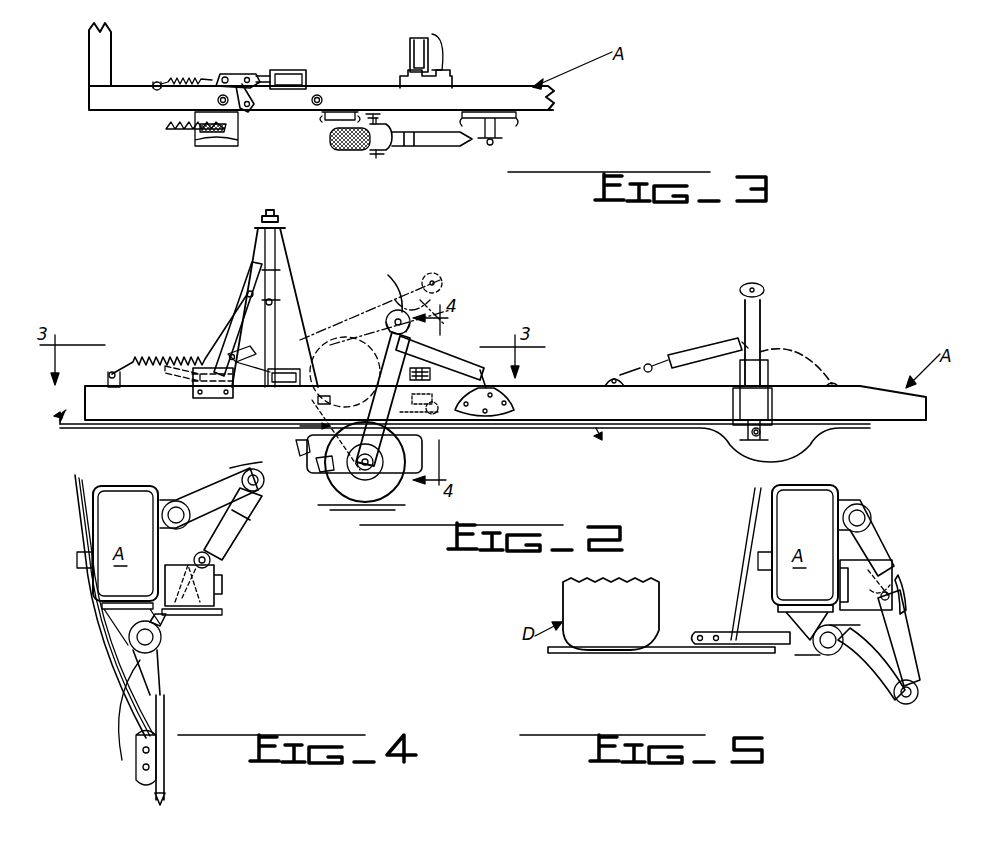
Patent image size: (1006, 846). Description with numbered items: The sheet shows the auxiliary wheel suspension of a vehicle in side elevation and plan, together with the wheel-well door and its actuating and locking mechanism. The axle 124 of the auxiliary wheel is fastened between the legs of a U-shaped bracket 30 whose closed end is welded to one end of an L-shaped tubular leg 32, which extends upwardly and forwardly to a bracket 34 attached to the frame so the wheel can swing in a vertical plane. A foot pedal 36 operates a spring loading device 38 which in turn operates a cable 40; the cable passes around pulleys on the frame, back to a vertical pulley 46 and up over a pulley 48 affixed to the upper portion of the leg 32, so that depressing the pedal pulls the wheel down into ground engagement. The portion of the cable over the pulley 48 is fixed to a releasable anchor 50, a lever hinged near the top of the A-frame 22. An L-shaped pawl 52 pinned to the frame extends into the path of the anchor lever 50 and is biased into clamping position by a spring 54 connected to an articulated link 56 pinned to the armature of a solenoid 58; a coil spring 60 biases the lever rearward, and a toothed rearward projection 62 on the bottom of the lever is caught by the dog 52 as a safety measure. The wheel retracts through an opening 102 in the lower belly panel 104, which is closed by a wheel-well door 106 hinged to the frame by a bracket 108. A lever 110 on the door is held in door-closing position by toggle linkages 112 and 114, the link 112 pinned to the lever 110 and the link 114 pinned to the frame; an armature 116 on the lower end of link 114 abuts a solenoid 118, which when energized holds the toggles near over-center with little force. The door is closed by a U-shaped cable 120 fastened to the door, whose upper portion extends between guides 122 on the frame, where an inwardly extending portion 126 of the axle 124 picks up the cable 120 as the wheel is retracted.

In FIG. 2, the A-frame 22 is at (288, 250).
In FIG. 3, the U-shaped bracket 30 is at (380, 148).
In FIG. 2, the U-shaped bracket 30 is at (318, 460).
In FIG. 3, the L-shaped tubular leg 32 is at (442, 142).
In FIG. 2, the L-shaped tubular leg 32 is at (450, 392).
In FIG. 3, the bracket 34 is at (498, 130).
In FIG. 2, the bracket 34 is at (494, 412).
In FIG. 2, the foot pedal 36 is at (764, 308).
In FIG. 2, the spring loading device 38 is at (712, 346).
In FIG. 2, the cable 40 is at (564, 384).
In FIG. 2, the vertical pulley 46 is at (432, 354).
In FIG. 2, the pulley 48 is at (390, 283).
In FIG. 2, the releasable anchor 50 is at (236, 334).
In FIG. 3, the L-shaped pawl 52 is at (244, 110).
In FIG. 3, the spring 54 is at (184, 78).
In FIG. 3, the articulated link 56 is at (236, 72).
In FIG. 2, the articulated link 56 is at (256, 348).
In FIG. 3, the solenoid 58 is at (284, 72).
In FIG. 2, the solenoid 58 is at (278, 368).
In FIG. 2, the coil spring 60 is at (190, 322).
In FIG. 3, the rearward projection 62 is at (178, 127).
In FIG. 2, the rearward projection 62 is at (178, 380).
In FIG. 2, the opening 102 is at (322, 428).
In FIG. 2, the lower belly panel 104 is at (598, 430).
In FIG. 2, the wheel-well door 106 is at (316, 472).
In FIG. 4, the wheel-well door 106 is at (166, 710).
In FIG. 5, the wheel-well door 106 is at (630, 654).
In FIG. 4, the bracket 108 is at (114, 682).
In FIG. 5, the bracket 108 is at (800, 628).
In FIG. 4, the lever 110 is at (166, 629).
In FIG. 5, the lever 110 is at (860, 670).
In FIG. 4, the toggle link 112 is at (242, 530).
In FIG. 5, the toggle link 112 is at (908, 644).
In FIG. 4, the toggle linkage 114 is at (213, 490).
In FIG. 5, the toggle linkage 114 is at (870, 548).
In FIG. 3, the armature 116 is at (436, 46).
In FIG. 2, the armature 116 is at (296, 446).
In FIG. 4, the armature 116 is at (248, 464).
In FIG. 5, the armature 116 is at (908, 606).
In FIG. 3, the solenoid 118 is at (440, 68).
In FIG. 4, the solenoid 118 is at (224, 578).
In FIG. 5, the solenoid 118 is at (868, 578).
In FIG. 3, the U-shaped cable 120 is at (327, 122).
In FIG. 2, the U-shaped cable 120 is at (410, 372).
In FIG. 4, the U-shaped cable 120 is at (92, 644).
In FIG. 5, the U-shaped cable 120 is at (748, 588).
In FIG. 2, the guides 122 is at (316, 400).
In FIG. 4, the guides 122 is at (78, 562).
In FIG. 5, the guides 122 is at (757, 562).
In FIG. 2, the axle 124 is at (362, 466).
In FIG. 3, the inwardly extending portion 126 is at (382, 114).